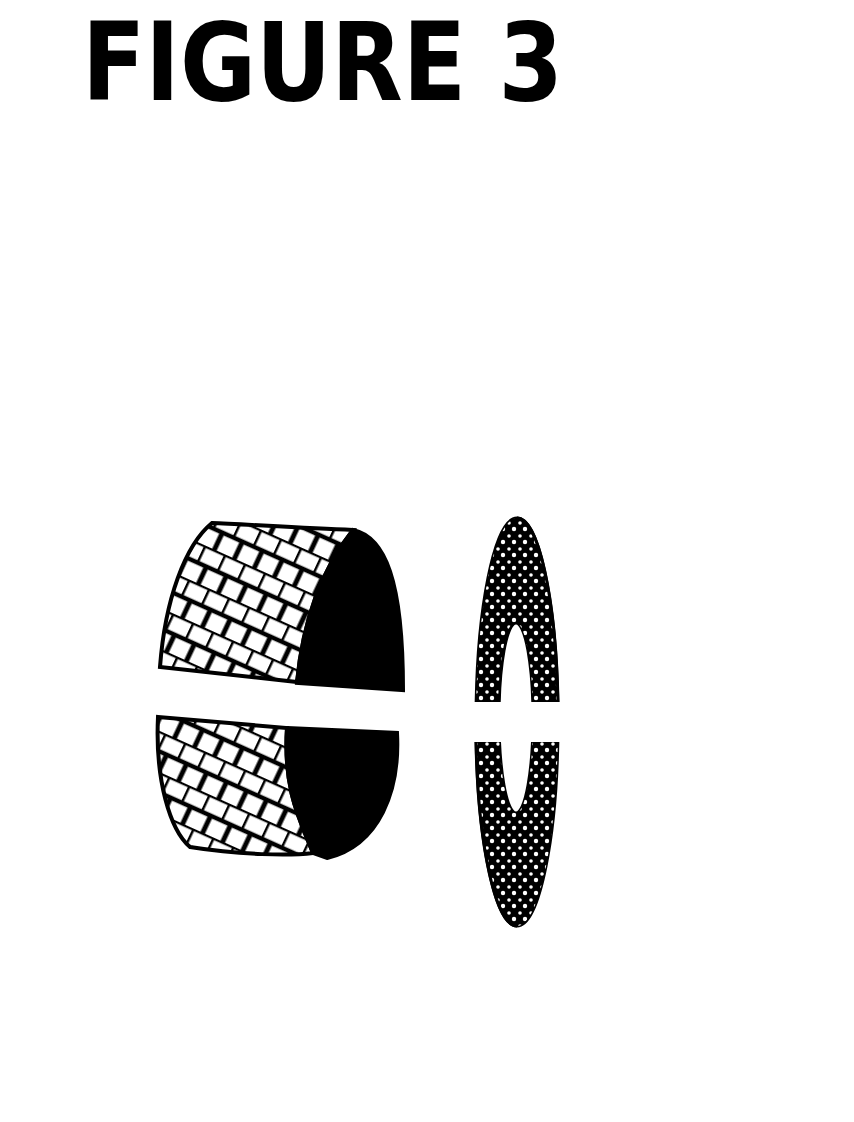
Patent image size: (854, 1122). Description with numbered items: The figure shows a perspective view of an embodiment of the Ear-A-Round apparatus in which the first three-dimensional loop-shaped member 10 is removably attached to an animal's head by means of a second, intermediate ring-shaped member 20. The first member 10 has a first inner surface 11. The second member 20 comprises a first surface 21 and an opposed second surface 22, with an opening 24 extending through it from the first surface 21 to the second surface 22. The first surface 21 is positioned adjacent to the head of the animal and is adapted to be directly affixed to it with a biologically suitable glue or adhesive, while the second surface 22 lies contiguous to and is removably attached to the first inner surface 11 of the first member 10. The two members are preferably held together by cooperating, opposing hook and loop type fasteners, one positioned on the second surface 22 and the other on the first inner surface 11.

The first loop-shaped member 10 is at (250, 503).
The first inner surface 11 is at (378, 533).
The second loop-shaped member 20 is at (522, 510).
The first surface 21 is at (543, 575).
The second surface 22 is at (487, 892).
The opening 24 is at (513, 673).